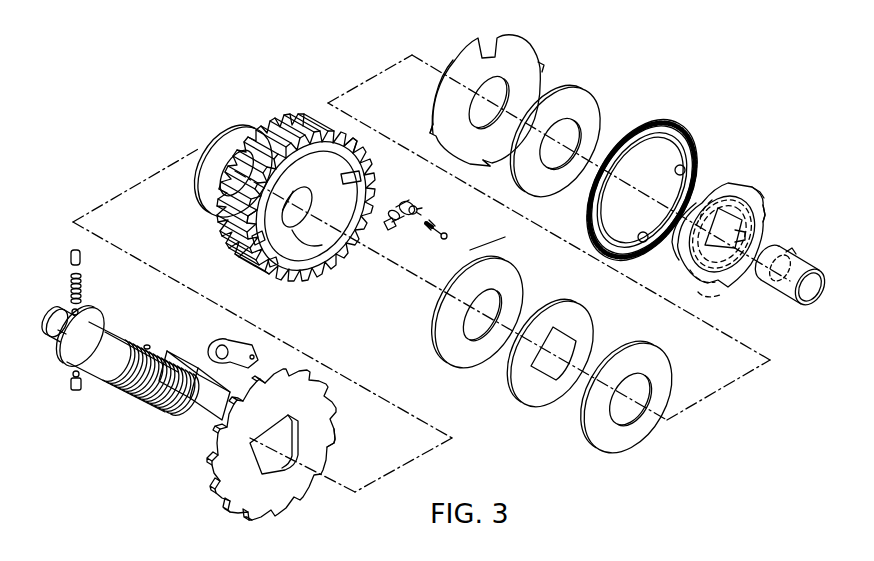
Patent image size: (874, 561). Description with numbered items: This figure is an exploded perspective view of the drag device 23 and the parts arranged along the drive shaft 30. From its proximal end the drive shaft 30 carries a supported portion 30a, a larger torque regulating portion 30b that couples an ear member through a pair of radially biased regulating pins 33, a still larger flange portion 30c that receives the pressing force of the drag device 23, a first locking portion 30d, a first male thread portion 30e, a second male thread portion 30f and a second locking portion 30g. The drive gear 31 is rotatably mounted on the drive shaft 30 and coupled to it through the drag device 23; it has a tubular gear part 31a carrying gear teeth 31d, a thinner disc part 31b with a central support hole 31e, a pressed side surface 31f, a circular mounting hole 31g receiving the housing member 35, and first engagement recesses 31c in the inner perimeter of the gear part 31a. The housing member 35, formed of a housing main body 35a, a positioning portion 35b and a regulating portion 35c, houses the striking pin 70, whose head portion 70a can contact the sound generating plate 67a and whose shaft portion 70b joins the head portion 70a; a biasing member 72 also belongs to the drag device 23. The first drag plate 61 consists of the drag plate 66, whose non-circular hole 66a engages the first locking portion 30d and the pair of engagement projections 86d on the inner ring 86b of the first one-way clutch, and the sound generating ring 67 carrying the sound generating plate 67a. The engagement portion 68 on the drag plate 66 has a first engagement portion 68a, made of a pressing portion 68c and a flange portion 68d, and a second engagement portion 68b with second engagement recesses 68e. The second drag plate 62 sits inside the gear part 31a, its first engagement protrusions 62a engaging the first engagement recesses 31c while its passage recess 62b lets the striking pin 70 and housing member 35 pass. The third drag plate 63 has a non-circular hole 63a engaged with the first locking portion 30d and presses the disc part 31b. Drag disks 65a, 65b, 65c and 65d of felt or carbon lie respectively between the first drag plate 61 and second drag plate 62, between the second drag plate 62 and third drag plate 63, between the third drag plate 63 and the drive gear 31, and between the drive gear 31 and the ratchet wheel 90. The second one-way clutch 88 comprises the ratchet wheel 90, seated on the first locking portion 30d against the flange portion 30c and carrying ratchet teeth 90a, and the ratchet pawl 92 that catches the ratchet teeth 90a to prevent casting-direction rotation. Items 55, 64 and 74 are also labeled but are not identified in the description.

The drag device 23 is at (619, 194).
The drive shaft 30 is at (141, 362).
The supported portion 30a is at (57, 310).
The torque regulating portion 30b is at (56, 338).
The flange portion 30c is at (72, 308).
The first locking portion 30d is at (113, 337).
The first male thread portion 30e is at (117, 390).
The second male thread portion 30f is at (172, 426).
The second locking portion 30g is at (197, 393).
The drive gear 31 is at (299, 195).
The gear part 31a is at (217, 131).
The disc part 31b is at (310, 240).
The first engagement recess 31c is at (365, 182).
The gear teeth 31d is at (278, 131).
The support hole 31e is at (232, 232).
The pressed side surface 31f is at (277, 284).
The mounting hole 31g is at (357, 143).
The regulating pins 33 is at (76, 249).
The housing member 35 is at (429, 213).
The housing main body 35a is at (404, 204).
The positioning portion 35b is at (389, 217).
The regulating portion 35c is at (418, 213).
The subassembly boundary 55 is at (323, 490).
The first drag plate 61 is at (701, 209).
The second drag plate 62 is at (523, 132).
The first engagement protrusion 62a is at (430, 128).
The passage recess 62b is at (480, 46).
The third drag plate 63 is at (544, 390).
The non-circular hole 63a is at (556, 405).
The pin unit 64 is at (391, 271).
The drag disk 65a is at (600, 93).
The drag disk 65b is at (655, 430).
The drag disk 65c is at (470, 367).
The drag disc 65d is at (210, 150).
The drag plate 66 is at (716, 228).
The non-circular hole 66a is at (745, 236).
The sound generating ring 67 is at (662, 179).
The sound generating plate 67a is at (645, 118).
The engagement portion 68 is at (656, 304).
The first engagement portion 68a is at (671, 291).
The second engagement portion 68b is at (698, 308).
The pressing portion 68c is at (708, 186).
The flange portion 68d is at (768, 187).
The second engagement recess 68e is at (768, 207).
The striking pin 70 is at (407, 273).
The head portion 70a is at (430, 228).
The shaft portion 70b is at (447, 240).
The biasing member 72 is at (398, 270).
The spacer 74 is at (477, 242).
The inner ring 86b is at (776, 302).
The engagement projections 86d is at (790, 307).
The second one-way clutch 88 is at (248, 444).
The ratchet wheel 90 is at (267, 444).
The ratchet teeth 90a is at (338, 425).
The ratchet pawl 92 is at (222, 438).